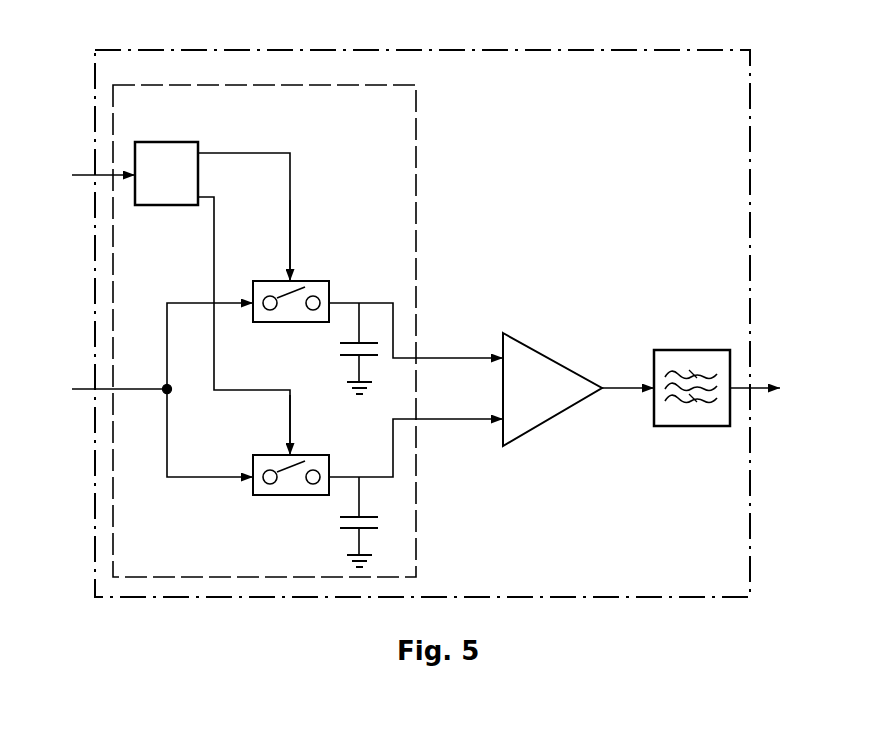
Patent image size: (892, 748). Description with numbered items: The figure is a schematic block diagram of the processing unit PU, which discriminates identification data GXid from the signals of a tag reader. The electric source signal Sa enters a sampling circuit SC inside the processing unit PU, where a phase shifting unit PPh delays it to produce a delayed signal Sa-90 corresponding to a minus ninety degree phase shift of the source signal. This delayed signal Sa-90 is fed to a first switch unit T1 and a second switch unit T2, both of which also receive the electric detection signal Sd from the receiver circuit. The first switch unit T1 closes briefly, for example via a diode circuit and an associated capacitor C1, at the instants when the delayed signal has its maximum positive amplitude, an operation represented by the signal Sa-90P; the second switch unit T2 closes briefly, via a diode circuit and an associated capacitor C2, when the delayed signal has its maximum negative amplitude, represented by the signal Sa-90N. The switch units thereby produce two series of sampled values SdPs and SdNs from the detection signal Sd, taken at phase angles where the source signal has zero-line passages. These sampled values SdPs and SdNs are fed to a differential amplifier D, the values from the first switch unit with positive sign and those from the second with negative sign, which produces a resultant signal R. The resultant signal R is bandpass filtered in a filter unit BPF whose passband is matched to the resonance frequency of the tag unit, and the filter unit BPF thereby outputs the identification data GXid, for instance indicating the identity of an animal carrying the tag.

The processing unit PU is at (131, 26).
The sampling circuit SC is at (305, 330).
The phase shifting unit PPh is at (189, 151).
The first switch unit T1 is at (282, 325).
The second switch unit T2 is at (268, 502).
The capacitor C1 is at (340, 348).
The capacitor C2 is at (339, 522).
The differential amplifier D is at (556, 404).
The filter unit BPF is at (668, 358).
The electric source signal Sa is at (84, 175).
The electric detection signal Sd is at (143, 390).
The delayed signal Sa-90 is at (244, 304).
The positive sampling signal Sa-90P is at (329, 237).
The negative sampling signal Sa-90N is at (249, 420).
The positive sampled values SdPs is at (416, 330).
The negative sampled values SdNs is at (416, 448).
The resultant signal R is at (628, 374).
The identification data GXid is at (786, 389).